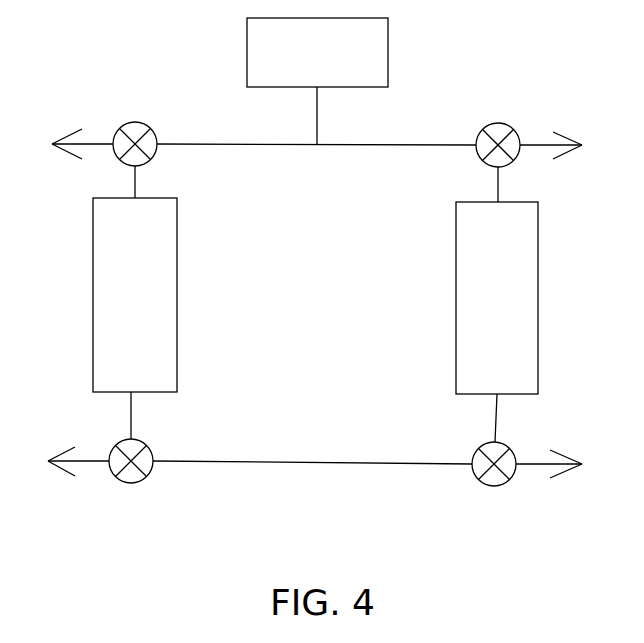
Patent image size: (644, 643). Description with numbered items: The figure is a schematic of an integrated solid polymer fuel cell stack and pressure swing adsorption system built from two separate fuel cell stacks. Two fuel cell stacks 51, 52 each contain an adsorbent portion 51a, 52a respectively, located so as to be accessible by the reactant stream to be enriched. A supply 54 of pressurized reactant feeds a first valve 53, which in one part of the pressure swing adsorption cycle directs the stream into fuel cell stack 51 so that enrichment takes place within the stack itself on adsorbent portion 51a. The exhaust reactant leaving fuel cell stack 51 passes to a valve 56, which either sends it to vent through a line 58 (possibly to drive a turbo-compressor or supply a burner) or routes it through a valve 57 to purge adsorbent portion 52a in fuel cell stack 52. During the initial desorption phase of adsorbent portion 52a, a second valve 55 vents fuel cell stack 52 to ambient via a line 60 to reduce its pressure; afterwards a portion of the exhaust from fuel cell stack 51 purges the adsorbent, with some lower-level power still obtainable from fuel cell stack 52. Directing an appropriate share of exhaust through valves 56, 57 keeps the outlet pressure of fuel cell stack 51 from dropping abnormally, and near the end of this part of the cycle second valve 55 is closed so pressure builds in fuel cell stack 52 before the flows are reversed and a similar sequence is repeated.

The fuel cell stack 51 is at (92, 253).
The adsorbent portion 51a is at (120, 337).
The fuel cell stack 52 is at (540, 255).
The adsorbent portion 52a is at (510, 339).
The first valve 53 is at (153, 156).
The supply 54 is at (363, 52).
The second valve 55 is at (479, 160).
The valve 56 is at (153, 448).
The valve 57 is at (473, 452).
The line 58 is at (92, 463).
The line 60 is at (535, 142).